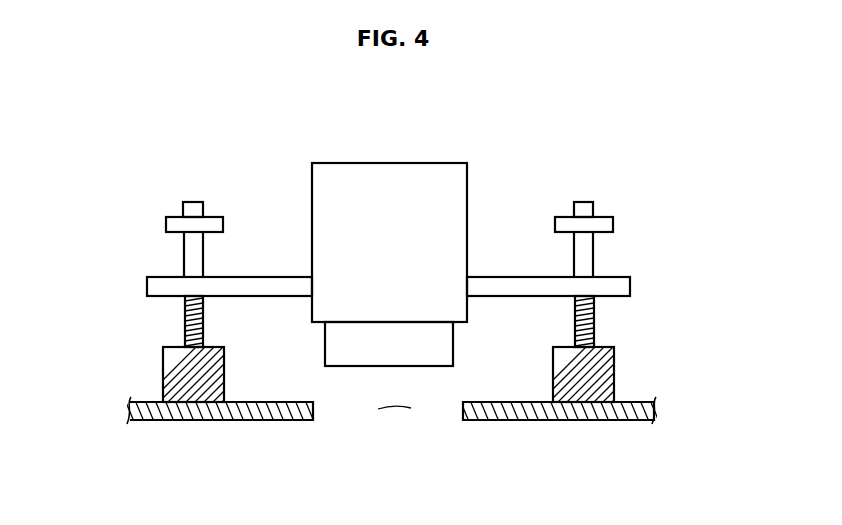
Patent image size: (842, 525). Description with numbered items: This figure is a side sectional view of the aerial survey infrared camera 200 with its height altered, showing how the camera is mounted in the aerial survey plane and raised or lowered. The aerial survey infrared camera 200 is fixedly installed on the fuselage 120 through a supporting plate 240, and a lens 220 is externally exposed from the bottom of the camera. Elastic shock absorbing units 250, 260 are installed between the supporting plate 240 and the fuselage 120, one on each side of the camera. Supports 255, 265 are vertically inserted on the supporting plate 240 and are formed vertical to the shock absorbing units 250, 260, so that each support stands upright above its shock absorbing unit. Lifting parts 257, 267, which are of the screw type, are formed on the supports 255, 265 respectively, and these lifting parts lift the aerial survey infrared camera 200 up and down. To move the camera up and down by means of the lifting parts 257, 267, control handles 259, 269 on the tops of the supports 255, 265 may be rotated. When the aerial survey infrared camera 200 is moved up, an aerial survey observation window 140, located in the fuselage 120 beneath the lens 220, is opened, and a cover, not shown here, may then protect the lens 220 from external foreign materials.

The aerial survey infrared camera 200 is at (377, 178).
The lens 220 is at (361, 355).
The supporting plate 240 is at (620, 288).
The shock absorbing unit 250 is at (177, 368).
The support 255 is at (190, 249).
The lifting part 257 is at (191, 322).
The control handle 259 is at (172, 222).
The shock absorbing unit 260 is at (600, 378).
The support 265 is at (585, 260).
The lifting part 267 is at (594, 330).
The control handle 269 is at (605, 225).
The fuselage 120 is at (212, 410).
The aerial survey observation window 140 is at (395, 408).